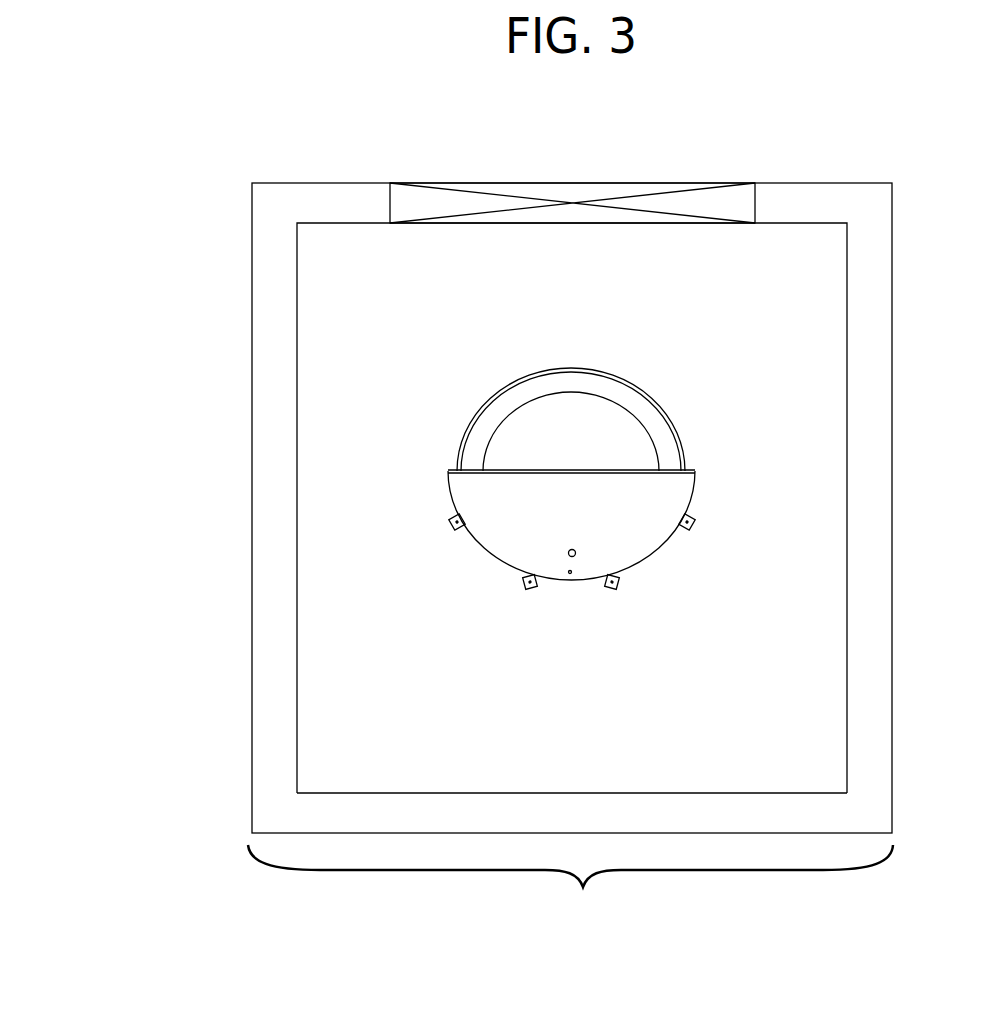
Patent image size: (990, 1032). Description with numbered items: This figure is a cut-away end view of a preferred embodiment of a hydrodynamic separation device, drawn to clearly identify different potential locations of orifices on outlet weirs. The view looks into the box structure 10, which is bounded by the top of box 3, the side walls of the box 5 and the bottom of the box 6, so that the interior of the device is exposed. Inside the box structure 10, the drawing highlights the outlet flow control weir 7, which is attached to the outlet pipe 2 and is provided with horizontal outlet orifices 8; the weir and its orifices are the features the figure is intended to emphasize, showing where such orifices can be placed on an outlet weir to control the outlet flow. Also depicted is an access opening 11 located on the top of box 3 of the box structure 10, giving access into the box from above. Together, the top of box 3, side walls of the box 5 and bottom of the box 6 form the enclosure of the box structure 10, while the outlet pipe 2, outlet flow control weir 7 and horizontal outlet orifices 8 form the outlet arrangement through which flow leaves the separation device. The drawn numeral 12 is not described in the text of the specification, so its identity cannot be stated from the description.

The outlet pipe 2 is at (647, 400).
The top of box 3 is at (352, 207).
The side walls of the box 5 is at (265, 545).
The bottom of the box 6 is at (760, 808).
The outlet flow control weir 7 is at (643, 488).
The horizontal outlet orifices 8 is at (582, 555).
The box structure 10 is at (570, 895).
The access opening 11 is at (690, 205).
The mounting tab 12 is at (443, 523).